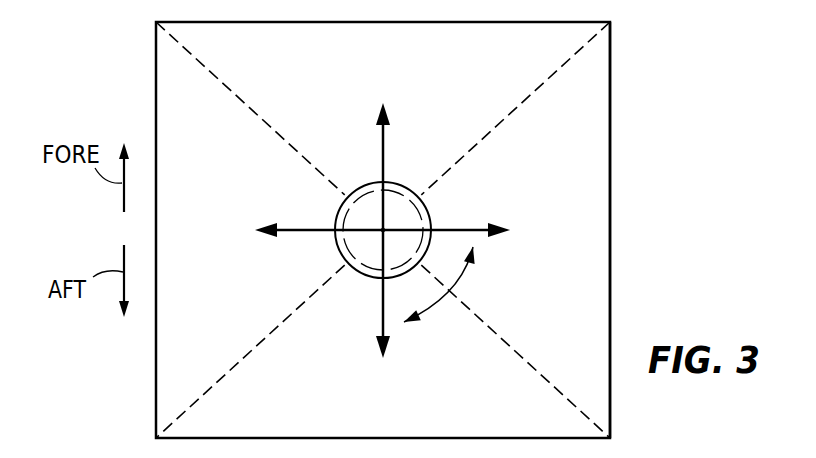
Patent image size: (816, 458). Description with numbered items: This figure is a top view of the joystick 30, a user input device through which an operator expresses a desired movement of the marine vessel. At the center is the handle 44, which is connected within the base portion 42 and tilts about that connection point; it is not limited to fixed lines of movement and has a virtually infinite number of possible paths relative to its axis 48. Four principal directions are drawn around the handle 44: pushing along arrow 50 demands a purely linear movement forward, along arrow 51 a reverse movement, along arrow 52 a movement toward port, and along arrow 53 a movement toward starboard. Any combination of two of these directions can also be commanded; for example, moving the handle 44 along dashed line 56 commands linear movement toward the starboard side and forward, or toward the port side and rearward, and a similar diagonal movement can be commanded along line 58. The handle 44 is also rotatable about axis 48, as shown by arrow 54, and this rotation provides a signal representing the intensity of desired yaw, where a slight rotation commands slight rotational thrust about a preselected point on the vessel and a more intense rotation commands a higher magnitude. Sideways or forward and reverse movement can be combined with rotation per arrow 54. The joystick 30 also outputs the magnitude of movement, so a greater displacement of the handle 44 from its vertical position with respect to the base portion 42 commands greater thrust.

The joystick 30 is at (633, 98).
The base portion 42 is at (583, 228).
The handle 44 is at (415, 213).
The axis 48 is at (382, 232).
The arrow 50 is at (385, 148).
The arrow 51 is at (381, 323).
The arrow 52 is at (293, 229).
The arrow 53 is at (476, 228).
The arrow 54 is at (458, 285).
The dashed line 56 is at (528, 98).
The line 58 is at (248, 99).